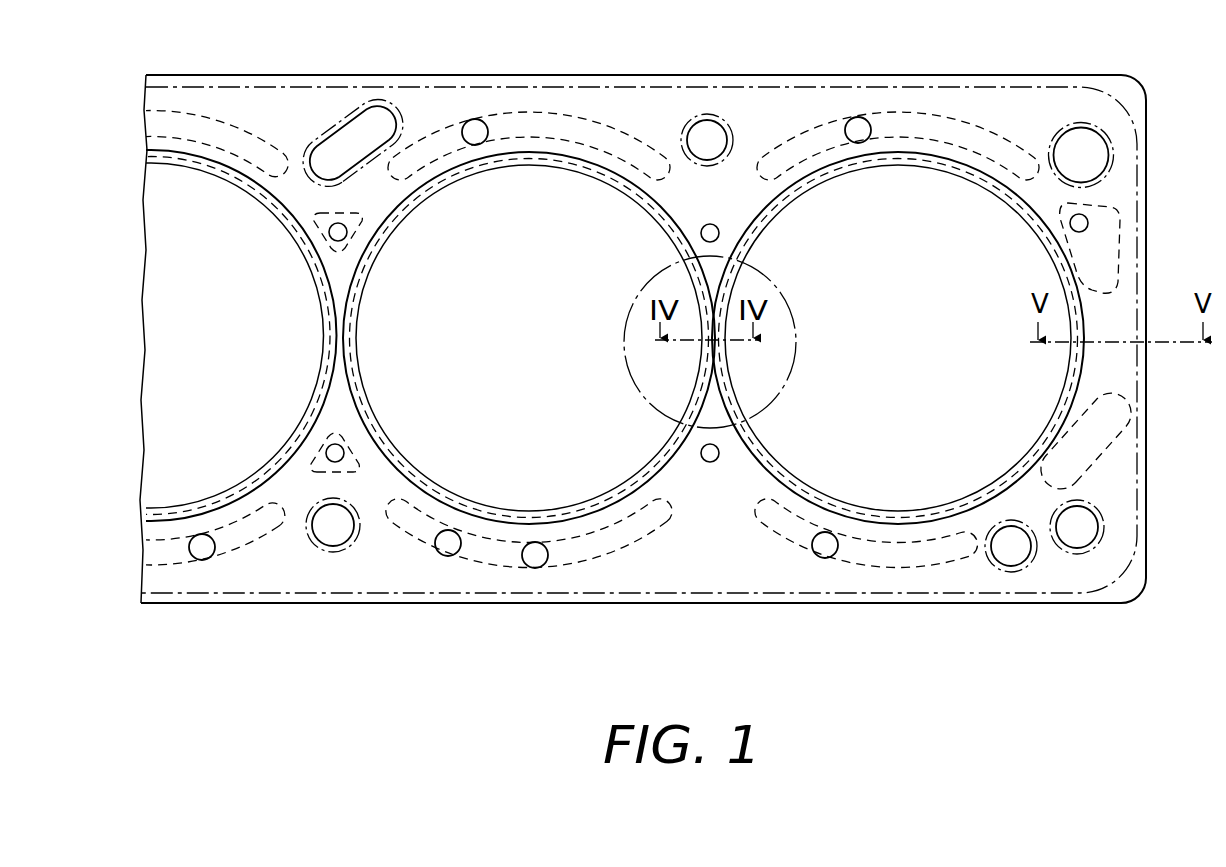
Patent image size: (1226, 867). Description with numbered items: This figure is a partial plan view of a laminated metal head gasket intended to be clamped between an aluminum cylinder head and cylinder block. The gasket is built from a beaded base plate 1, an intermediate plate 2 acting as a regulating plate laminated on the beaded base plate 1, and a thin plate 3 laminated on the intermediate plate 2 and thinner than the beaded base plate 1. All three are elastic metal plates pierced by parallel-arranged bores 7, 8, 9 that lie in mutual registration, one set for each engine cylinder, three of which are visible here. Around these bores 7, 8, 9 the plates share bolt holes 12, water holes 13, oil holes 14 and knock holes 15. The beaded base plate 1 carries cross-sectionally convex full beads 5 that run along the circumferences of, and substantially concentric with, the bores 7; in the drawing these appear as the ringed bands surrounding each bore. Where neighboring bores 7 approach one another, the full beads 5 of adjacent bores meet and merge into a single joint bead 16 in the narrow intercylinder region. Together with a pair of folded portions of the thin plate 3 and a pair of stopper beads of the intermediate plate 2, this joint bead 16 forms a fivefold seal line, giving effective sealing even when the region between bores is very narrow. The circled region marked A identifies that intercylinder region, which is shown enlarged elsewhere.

The beaded base plate 1 is at (643, 373).
The intermediate plate 2 is at (643, 373).
The thin plate 3 is at (775, 573).
The full beads 5 is at (542, 278).
The bores 7 is at (542, 278).
The bores 8 is at (542, 278).
The bores 9 is at (764, 207).
The bolt holes 12 is at (710, 135).
The water holes 13 is at (932, 128).
The oil holes 14 is at (349, 136).
The knock holes 15 is at (1090, 155).
The joint bead 16 is at (712, 345).
The portion designated by reference letter A is at (790, 378).